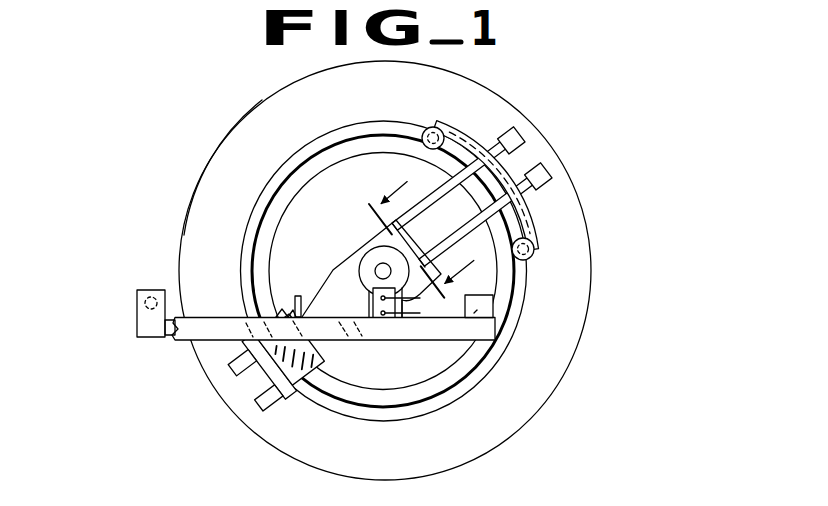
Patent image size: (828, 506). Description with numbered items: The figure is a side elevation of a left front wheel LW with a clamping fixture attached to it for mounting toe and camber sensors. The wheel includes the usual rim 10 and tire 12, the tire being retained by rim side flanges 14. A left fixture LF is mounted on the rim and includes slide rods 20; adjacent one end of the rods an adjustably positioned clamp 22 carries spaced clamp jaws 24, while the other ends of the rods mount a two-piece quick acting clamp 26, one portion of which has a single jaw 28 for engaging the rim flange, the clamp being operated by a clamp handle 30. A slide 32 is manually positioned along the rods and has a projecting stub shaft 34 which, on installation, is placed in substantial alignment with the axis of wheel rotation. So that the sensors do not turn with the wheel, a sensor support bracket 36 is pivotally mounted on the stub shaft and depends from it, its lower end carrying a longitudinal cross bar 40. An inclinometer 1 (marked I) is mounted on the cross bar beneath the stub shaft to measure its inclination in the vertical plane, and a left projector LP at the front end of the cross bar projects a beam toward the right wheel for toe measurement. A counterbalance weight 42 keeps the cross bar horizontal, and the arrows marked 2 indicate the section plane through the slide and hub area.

The left front wheel LW is at (225, 140).
The left projector LP is at (135, 318).
The left fixture LF is at (540, 221).
The rim 10 is at (256, 200).
The tire 12 is at (208, 177).
The rim side flanges 14 is at (388, 131).
The slide rods 20 is at (536, 172).
The clamp 22 is at (527, 190).
The clamp jaws 24 is at (446, 130).
The quick acting clamp 26 is at (335, 361).
The single jaw 28 is at (266, 378).
The clamp handle 30 is at (277, 298).
The slide 32 is at (343, 256).
The stub shaft 34 is at (383, 271).
The sensor support bracket 36 is at (372, 277).
The cross bar 40 is at (188, 341).
The counterbalance weight 42 is at (493, 307).
The section line 2- 2 is at (430, 232).
The inclinometer 1 is at (370, 305).